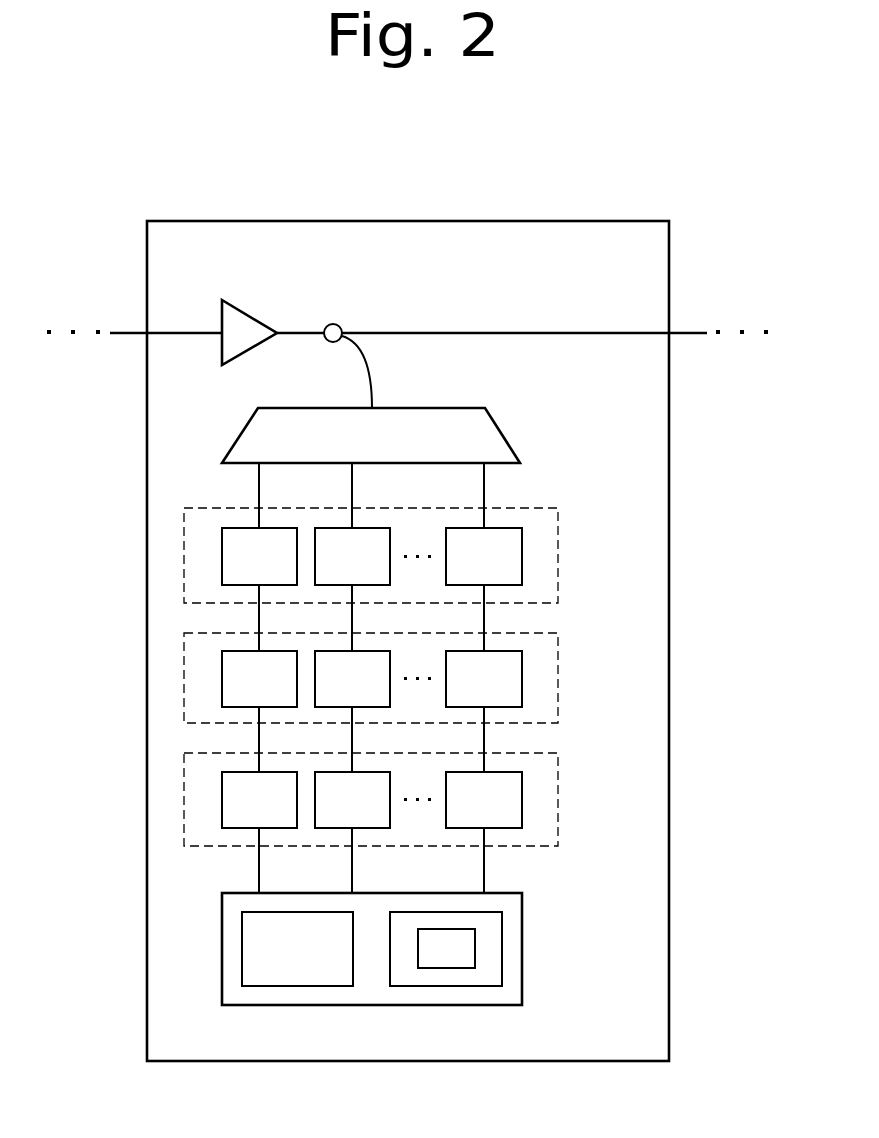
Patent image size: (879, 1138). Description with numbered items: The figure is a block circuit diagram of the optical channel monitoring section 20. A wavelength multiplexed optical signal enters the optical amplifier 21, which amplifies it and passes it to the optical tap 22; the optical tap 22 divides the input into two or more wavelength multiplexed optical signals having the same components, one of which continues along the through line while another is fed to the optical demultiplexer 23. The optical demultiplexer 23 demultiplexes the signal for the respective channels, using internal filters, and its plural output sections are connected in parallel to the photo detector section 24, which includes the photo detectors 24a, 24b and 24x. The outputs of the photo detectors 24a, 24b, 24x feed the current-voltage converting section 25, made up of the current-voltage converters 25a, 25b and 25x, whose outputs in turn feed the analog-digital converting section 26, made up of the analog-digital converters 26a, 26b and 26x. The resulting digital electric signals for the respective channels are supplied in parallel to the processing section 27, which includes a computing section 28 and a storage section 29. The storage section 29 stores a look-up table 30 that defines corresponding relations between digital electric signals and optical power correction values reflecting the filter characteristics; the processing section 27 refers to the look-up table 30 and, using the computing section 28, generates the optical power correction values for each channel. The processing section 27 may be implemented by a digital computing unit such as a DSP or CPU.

The optical channel monitoring section 20 is at (669, 275).
The optical amplifier 21 is at (247, 313).
The optical tap 22 is at (336, 324).
The optical demultiplexer 23 is at (503, 432).
The photo detector section 24 is at (415, 555).
The photo detector 24a is at (284, 569).
The photo detector 24b is at (377, 569).
The photo detector 24x is at (508, 569).
The current-voltage converting section 25 is at (415, 678).
The current-voltage converter 25a is at (284, 690).
The current-voltage converter 25b is at (377, 690).
The current-voltage converter 25x is at (508, 690).
The analog-digital converting section 26 is at (415, 799).
The analog-digital converter 26a is at (284, 811).
The analog-digital converter 26b is at (377, 811).
The analog-digital converter 26x is at (508, 811).
The processing section 27 is at (522, 930).
The computing section 28 is at (242, 965).
The storage section 29 is at (502, 965).
The look-up table 30 is at (445, 968).